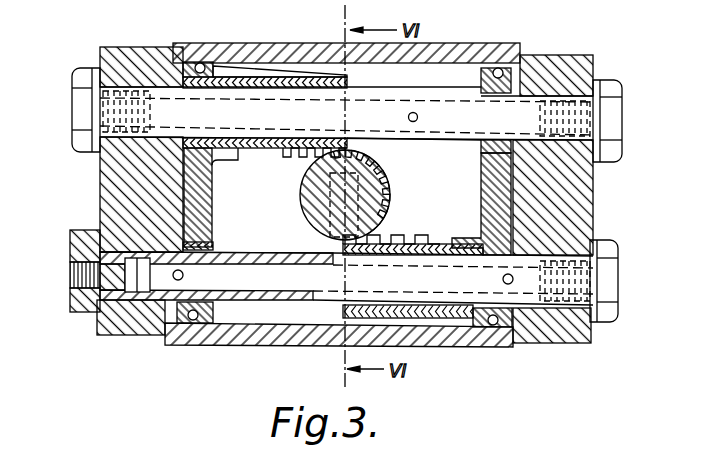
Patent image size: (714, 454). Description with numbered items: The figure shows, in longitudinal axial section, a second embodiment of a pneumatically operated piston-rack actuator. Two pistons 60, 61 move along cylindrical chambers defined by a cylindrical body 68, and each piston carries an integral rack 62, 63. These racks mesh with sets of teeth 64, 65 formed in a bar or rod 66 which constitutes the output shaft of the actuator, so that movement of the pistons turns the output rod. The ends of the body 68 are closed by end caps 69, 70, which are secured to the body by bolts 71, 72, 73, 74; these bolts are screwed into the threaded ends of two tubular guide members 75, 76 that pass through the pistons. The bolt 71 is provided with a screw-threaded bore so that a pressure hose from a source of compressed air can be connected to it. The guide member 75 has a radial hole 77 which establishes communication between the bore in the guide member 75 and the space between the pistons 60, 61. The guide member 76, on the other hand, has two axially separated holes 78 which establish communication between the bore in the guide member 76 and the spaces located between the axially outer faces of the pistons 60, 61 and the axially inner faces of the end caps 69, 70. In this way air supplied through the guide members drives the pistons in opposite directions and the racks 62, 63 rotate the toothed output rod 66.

The piston 60 is at (213, 222).
The piston 61 is at (483, 172).
The rack 62 is at (284, 158).
The rack 63 is at (408, 241).
The set of teeth 64 is at (303, 180).
The set of teeth 65 is at (389, 211).
The bar or rod 66 is at (388, 178).
The cylindrical body 68 is at (441, 341).
The end cap 69 is at (108, 333).
The end cap 70 is at (553, 62).
The bolt 71 is at (78, 82).
The bolt 72 is at (72, 312).
The bolt 73 is at (612, 88).
The bolt 74 is at (604, 322).
The tubular guide member 75 is at (433, 98).
The tubular guide member 76 is at (252, 300).
The radial hole 77 is at (416, 122).
The holes 78 is at (184, 275).